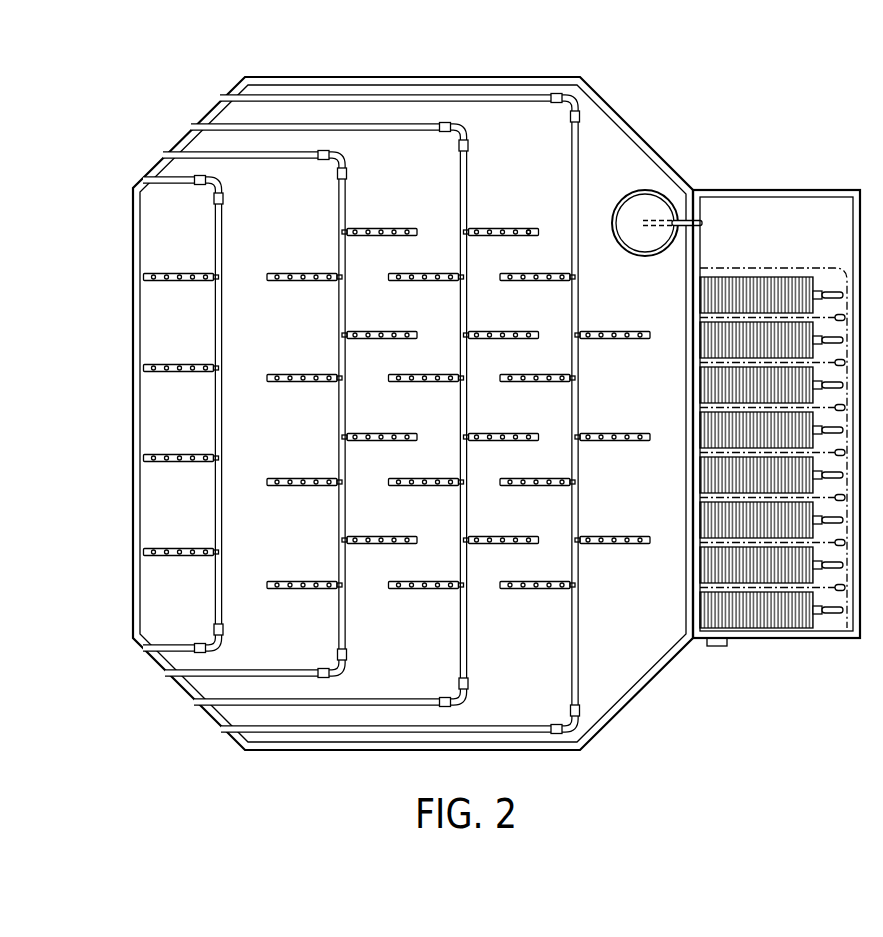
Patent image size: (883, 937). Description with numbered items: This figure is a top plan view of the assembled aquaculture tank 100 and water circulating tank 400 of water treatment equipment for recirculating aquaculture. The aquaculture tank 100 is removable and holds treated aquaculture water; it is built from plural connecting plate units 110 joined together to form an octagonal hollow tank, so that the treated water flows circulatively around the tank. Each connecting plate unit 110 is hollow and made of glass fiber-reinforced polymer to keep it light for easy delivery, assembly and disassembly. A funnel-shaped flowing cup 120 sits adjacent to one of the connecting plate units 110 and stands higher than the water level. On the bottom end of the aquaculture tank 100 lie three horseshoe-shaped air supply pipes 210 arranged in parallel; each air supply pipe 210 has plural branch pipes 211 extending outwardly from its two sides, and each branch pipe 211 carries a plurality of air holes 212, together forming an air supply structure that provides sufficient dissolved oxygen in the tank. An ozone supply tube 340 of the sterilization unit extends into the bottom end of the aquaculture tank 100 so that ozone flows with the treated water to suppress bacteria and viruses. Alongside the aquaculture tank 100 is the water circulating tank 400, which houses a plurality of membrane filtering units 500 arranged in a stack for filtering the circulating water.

The aquaculture tank 100 is at (105, 378).
The connecting plate unit 110 is at (137, 492).
The flowing cup 120 is at (648, 192).
The air supply pipe 210 is at (282, 155).
The branch pipe 211 is at (490, 229).
The air hole 212 is at (533, 229).
The ozone supply tube 340 is at (218, 593).
The water circulating tank 400 is at (818, 180).
The membrane filtering unit 500 is at (768, 632).